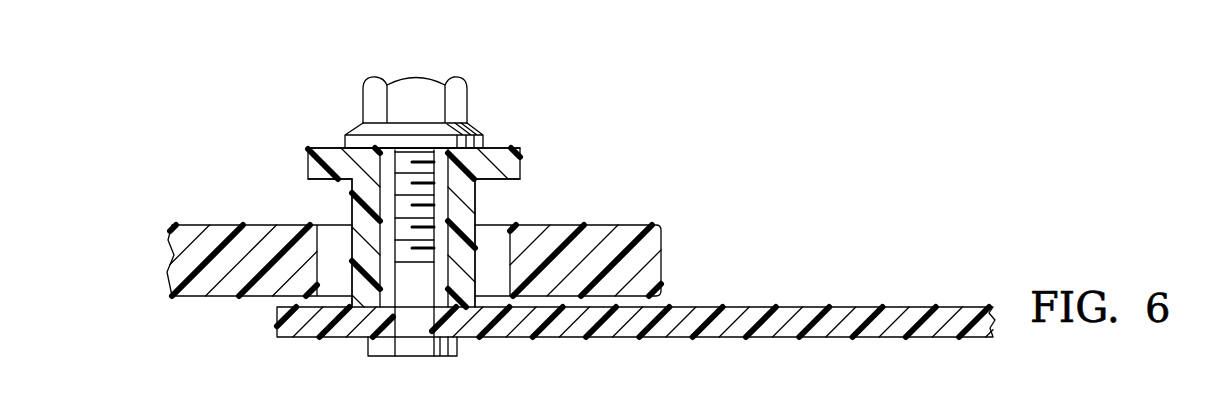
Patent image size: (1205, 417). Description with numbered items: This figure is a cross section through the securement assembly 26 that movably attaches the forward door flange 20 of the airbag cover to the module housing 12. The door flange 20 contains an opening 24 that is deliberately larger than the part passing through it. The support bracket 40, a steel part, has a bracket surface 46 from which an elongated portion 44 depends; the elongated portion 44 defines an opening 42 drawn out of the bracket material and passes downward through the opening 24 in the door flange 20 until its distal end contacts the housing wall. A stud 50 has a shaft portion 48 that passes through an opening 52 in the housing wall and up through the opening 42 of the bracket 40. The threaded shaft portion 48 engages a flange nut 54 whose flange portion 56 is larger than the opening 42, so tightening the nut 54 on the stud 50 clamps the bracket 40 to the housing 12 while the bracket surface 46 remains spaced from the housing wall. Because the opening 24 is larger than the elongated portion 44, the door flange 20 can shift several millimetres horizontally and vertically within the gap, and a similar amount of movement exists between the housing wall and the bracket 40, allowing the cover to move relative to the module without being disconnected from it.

The housing 12 is at (862, 307).
The forward door flange 20 is at (195, 225).
The opening 24 is at (512, 247).
The securement assembly 26 is at (361, 64).
The support bracket 40 is at (519, 147).
The opening 42 is at (448, 272).
The elongated portion 44 is at (352, 202).
The bracket surface 46 is at (319, 150).
The shaft portion 48 is at (403, 248).
The stud 50 is at (371, 359).
The opening 52 is at (403, 318).
The flange nut 54 is at (438, 77).
The flange portion 56 is at (483, 136).